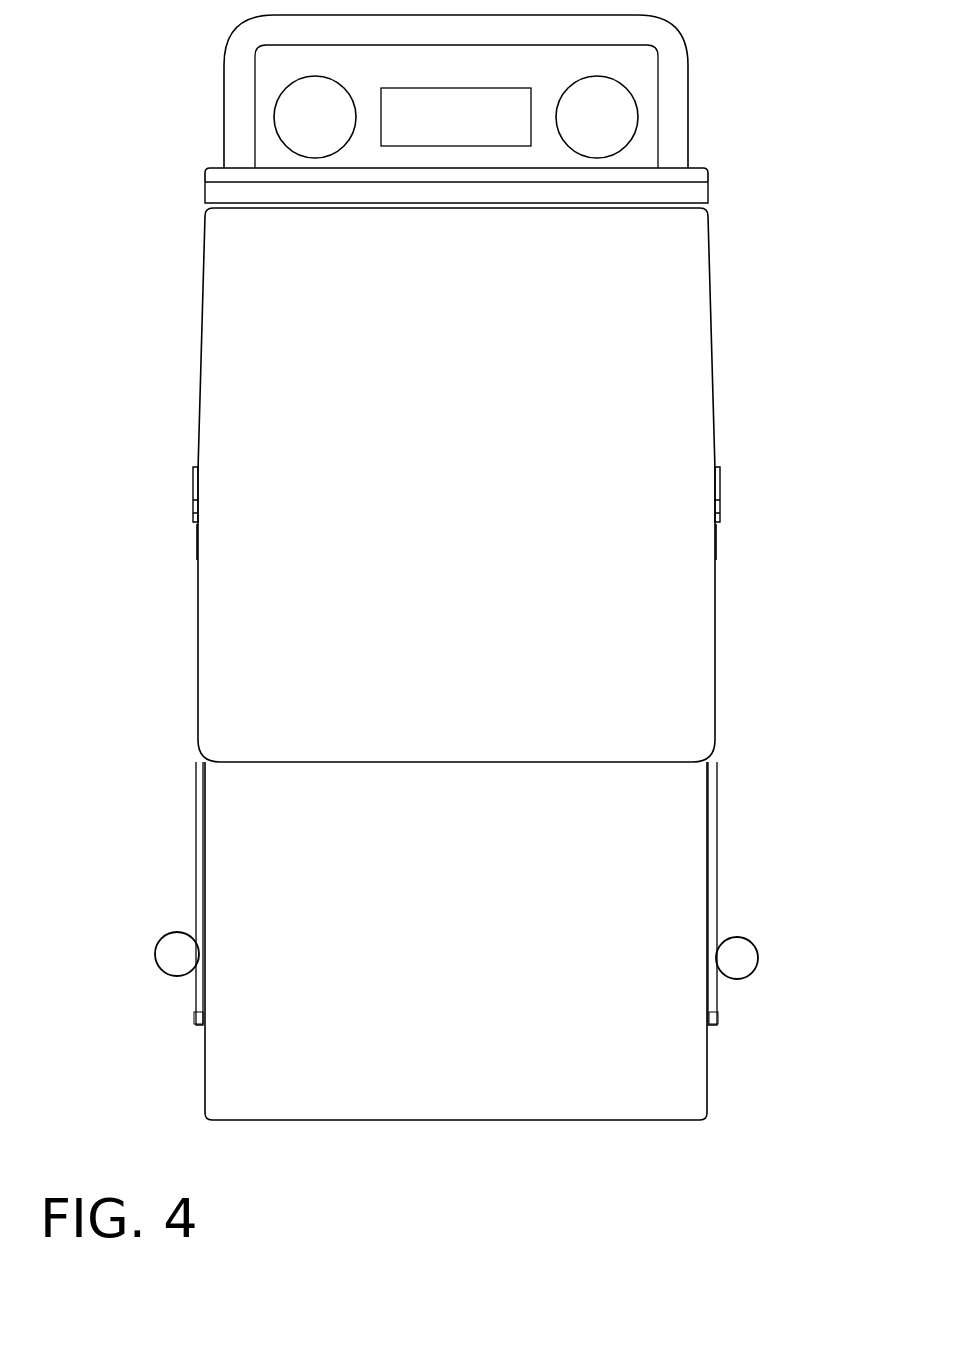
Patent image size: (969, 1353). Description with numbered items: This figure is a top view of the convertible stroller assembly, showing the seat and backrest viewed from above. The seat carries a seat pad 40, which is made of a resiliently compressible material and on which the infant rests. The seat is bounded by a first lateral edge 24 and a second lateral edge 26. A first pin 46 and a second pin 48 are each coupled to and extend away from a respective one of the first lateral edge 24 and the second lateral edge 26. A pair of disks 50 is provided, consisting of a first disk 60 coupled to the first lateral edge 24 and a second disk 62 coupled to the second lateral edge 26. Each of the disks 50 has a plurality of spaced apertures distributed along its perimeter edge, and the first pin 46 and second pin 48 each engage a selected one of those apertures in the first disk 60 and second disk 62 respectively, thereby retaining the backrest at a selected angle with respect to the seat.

The first lateral edge 24 is at (215, 988).
The second lateral edge 26 is at (708, 865).
The seat pad 40 is at (645, 1085).
The first pin 46 is at (195, 486).
The second pin 48 is at (715, 487).
The pair of disks 50 is at (195, 512).
The first disk 60 is at (197, 533).
The second disk 62 is at (716, 532).